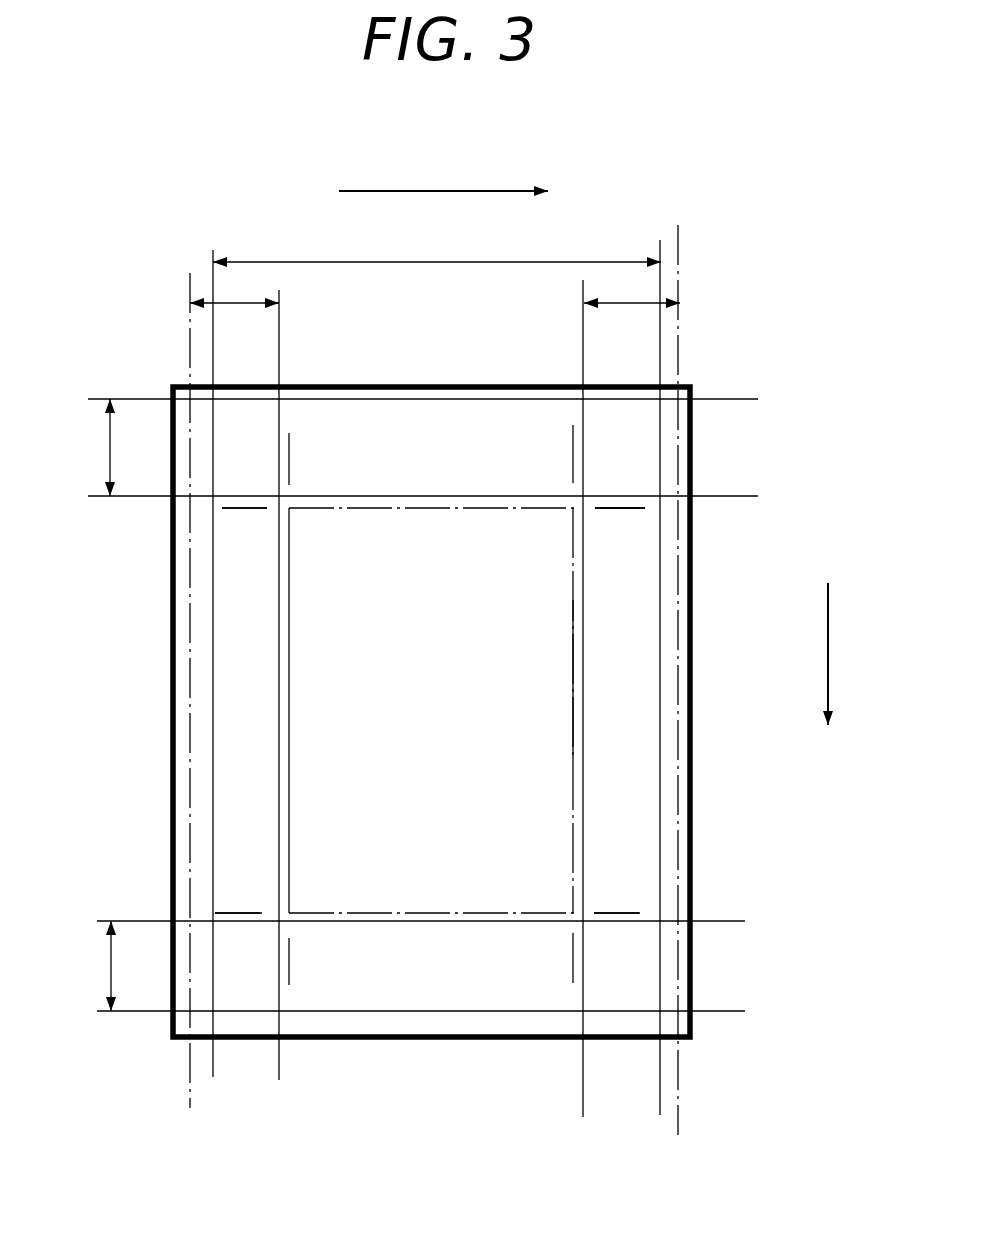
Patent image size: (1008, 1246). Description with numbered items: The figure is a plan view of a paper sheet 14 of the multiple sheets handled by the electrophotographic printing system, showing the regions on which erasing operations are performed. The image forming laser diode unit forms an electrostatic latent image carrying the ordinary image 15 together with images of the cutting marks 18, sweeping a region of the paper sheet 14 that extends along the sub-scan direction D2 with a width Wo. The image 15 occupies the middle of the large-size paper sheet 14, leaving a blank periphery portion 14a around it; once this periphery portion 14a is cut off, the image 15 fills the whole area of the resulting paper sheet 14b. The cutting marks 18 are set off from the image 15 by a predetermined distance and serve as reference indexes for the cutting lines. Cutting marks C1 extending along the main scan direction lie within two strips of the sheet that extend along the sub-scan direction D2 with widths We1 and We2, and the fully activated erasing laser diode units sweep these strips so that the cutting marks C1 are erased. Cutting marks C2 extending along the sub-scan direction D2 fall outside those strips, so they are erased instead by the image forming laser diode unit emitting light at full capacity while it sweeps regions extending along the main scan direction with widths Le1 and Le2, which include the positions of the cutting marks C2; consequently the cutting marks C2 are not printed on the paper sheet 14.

The large-size paper sheet 14 is at (695, 430).
The periphery portion 14a is at (425, 410).
The resulting paper sheet 14b is at (312, 849).
The image 15 is at (573, 662).
The cutting marks 18 is at (623, 505).
The cutting marks extending along the main scan direction C1 is at (640, 497).
The cutting marks extending along the sub-scan direction C2 is at (293, 458).
The width Wo is at (437, 246).
The width We1 is at (234, 288).
The width We2 is at (632, 288).
The width Le1 is at (81, 447).
The width Le2 is at (83, 966).
The sub-scan direction D2 is at (855, 654).